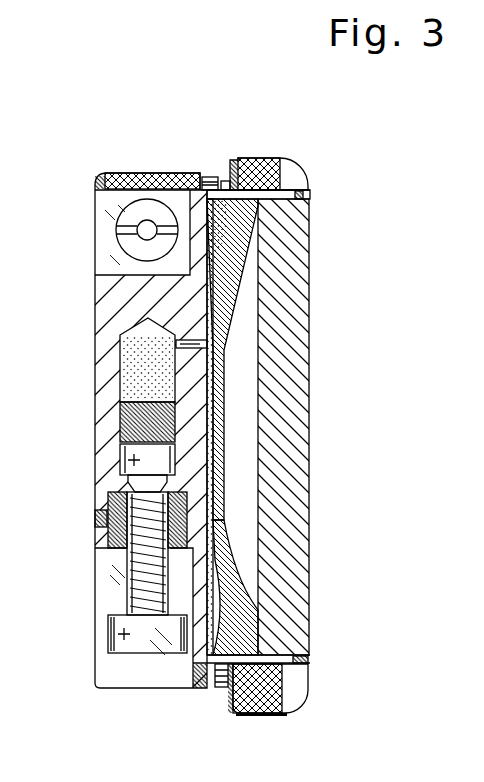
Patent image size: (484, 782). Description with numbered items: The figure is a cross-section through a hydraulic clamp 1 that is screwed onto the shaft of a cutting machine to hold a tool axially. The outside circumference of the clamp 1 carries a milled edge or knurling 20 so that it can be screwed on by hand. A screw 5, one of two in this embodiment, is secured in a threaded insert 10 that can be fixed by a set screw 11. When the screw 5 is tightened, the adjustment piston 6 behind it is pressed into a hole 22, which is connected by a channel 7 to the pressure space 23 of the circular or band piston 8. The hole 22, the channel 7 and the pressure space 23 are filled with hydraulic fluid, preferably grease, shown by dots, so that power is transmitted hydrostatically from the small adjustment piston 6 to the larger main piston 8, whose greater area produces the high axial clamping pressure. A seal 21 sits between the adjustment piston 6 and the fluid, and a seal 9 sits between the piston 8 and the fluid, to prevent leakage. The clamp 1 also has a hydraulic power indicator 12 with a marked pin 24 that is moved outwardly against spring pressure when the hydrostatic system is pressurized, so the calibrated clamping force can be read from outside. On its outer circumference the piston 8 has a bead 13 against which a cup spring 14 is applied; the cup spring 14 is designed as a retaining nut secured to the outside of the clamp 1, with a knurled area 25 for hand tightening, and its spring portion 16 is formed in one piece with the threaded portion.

The clamp 1 is at (208, 147).
The screw 5 is at (122, 638).
The adjustment piston 6 is at (137, 460).
The channel 7 is at (218, 352).
The band piston 8 is at (295, 597).
The seal 9 is at (230, 582).
The threaded insert 10 is at (122, 531).
The set screw 11 is at (96, 520).
The hydraulic power indicator 12 is at (102, 259).
The bead 13 is at (308, 673).
The cup spring 14 is at (292, 718).
The spring portion 16 is at (303, 196).
The knurling 20 is at (124, 178).
The seal 21 is at (132, 422).
The hole 22 is at (130, 355).
The pressure space 23 is at (211, 221).
The pin 24 is at (146, 229).
The knurled area 25 is at (259, 160).